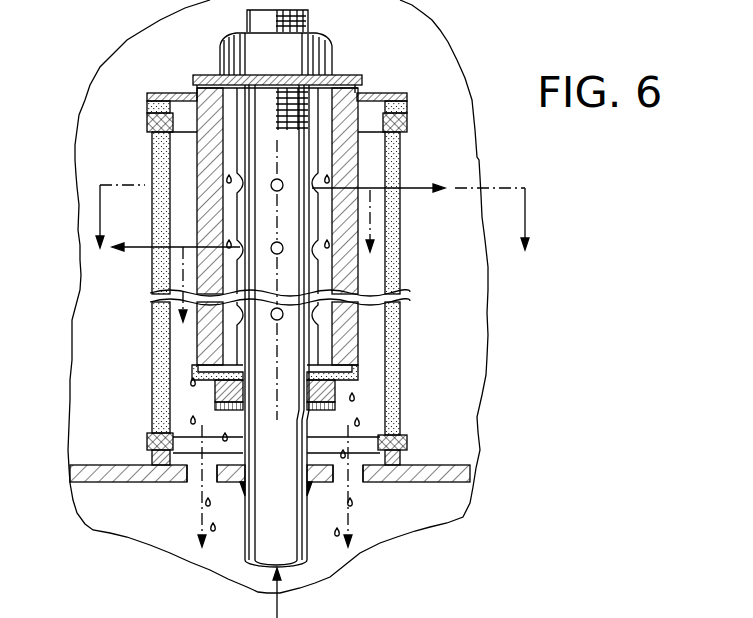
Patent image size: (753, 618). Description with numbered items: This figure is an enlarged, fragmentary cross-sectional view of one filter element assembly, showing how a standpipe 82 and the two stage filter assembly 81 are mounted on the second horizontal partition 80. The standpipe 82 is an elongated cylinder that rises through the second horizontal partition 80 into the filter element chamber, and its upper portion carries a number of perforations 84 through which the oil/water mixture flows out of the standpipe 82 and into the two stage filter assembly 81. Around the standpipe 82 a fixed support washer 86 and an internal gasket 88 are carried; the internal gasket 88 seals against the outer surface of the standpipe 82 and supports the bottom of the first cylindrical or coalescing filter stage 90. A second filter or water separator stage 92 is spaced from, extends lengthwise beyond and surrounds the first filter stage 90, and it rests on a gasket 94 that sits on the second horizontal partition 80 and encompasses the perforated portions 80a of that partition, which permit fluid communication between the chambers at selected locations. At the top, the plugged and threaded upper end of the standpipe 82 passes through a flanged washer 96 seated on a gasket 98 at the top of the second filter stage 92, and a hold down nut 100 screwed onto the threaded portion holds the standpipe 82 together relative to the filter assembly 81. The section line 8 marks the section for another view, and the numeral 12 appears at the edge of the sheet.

The hold down nut 100 is at (332, 52).
The flanged washer 96 is at (362, 76).
The gasket 98 is at (410, 100).
The first cylindrical or coalescing filter stage 90 is at (396, 170).
The second filter or water separator stage 92 is at (400, 270).
The perforations 84 is at (272, 178).
The standpipe 82 is at (287, 535).
The internal gasket 88 is at (340, 396).
The fixed support washer 86 is at (336, 406).
The gasket 94 is at (403, 463).
The second horizontal partition 80 is at (110, 465).
The perforated portions 80a is at (193, 482).
The two stage filter assembly 81 is at (148, 291).
The section line 8- 8 is at (312, 253).
The assembly 12 is at (690, 617).